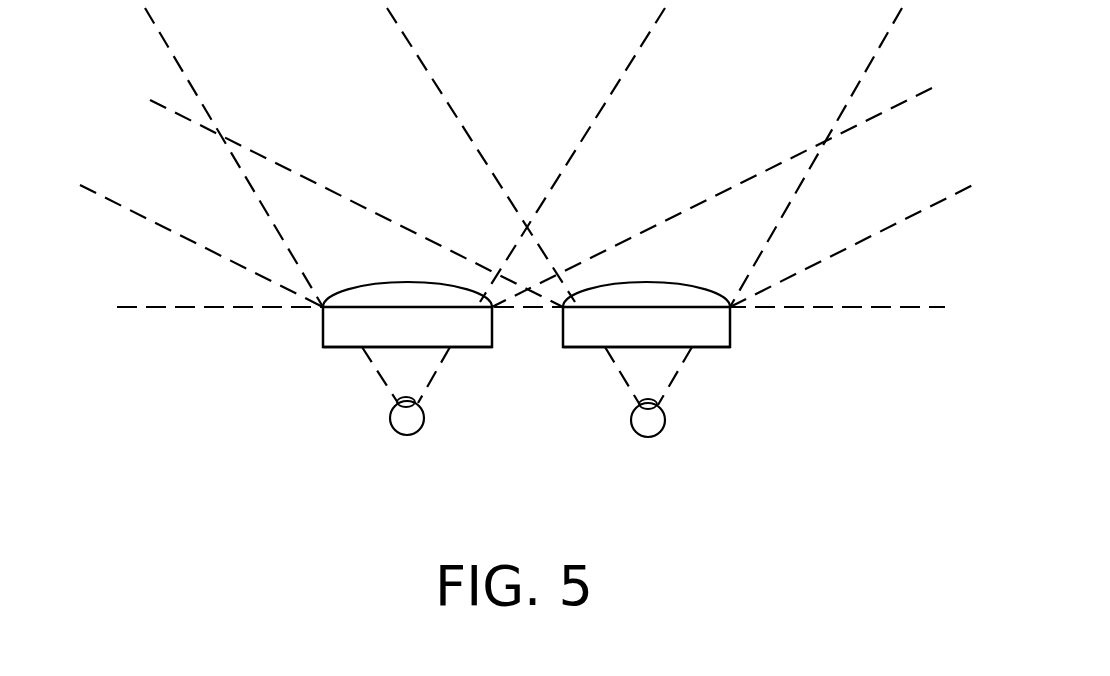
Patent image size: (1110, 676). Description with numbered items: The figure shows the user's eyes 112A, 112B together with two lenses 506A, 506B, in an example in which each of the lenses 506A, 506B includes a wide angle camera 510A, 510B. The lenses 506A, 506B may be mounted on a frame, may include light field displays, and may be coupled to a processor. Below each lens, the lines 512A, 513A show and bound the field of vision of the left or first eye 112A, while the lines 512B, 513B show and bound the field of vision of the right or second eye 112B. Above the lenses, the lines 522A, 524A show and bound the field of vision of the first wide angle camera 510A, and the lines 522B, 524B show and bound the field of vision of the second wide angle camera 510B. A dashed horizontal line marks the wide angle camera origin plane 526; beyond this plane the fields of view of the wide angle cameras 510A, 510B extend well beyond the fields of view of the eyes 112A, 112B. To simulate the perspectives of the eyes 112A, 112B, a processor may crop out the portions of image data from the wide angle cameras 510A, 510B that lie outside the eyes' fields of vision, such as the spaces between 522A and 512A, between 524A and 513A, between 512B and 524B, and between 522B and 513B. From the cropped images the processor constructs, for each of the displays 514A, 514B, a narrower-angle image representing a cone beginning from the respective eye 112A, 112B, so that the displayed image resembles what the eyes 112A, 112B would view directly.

The wide angle camera origin plane 526 is at (199, 308).
The wide angle camera 510A is at (378, 282).
The wide angle camera 510B is at (652, 282).
The lens 506A is at (323, 332).
The lens 506B is at (730, 328).
The line 524B is at (280, 163).
The line 522A is at (213, 252).
The line 524A is at (790, 158).
The line 522B is at (860, 242).
The display 514A is at (447, 350).
The display 514B is at (587, 350).
The line 512A is at (372, 372).
The line 513A is at (427, 383).
The line 512B is at (633, 395).
The line 513B is at (672, 377).
The eye 112A is at (387, 430).
The eye 112B is at (663, 428).